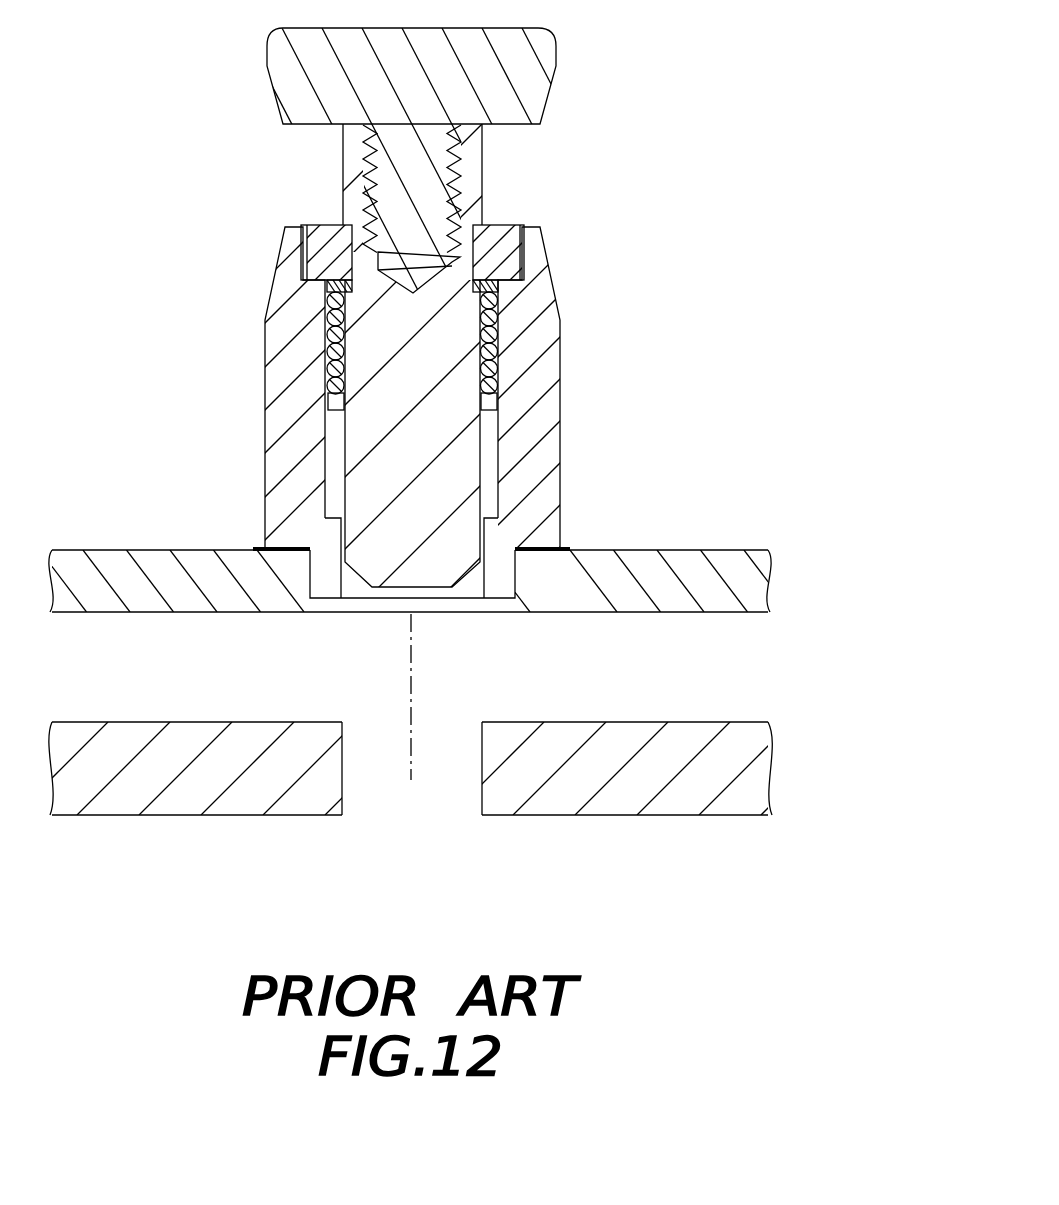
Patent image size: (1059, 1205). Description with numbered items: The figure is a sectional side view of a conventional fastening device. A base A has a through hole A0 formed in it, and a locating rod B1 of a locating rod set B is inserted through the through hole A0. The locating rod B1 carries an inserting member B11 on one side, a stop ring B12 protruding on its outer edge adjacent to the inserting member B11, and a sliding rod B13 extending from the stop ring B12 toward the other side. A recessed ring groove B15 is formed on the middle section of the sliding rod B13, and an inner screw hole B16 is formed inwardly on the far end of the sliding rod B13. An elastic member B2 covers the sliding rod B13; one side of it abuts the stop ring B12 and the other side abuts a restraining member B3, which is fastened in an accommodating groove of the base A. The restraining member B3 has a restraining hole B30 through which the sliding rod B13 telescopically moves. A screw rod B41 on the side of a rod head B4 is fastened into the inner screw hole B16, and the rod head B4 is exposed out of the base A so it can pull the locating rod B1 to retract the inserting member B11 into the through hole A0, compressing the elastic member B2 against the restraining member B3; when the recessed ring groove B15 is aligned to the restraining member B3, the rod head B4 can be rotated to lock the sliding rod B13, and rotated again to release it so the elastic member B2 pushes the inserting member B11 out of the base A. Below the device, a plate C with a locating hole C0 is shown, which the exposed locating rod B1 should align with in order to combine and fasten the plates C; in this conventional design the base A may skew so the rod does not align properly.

The rod head B4 is at (541, 84).
The sliding rod B13 is at (355, 155).
The screw rod B41 is at (400, 207).
The locating rod B1 is at (523, 232).
The restraining hole B30 is at (350, 250).
The restraining member B3 is at (507, 248).
The recessed ring groove B15 is at (337, 285).
The inner screw hole B16 is at (445, 282).
The elastic member B2 is at (327, 375).
The through hole A0 is at (515, 355).
The stop ring B12 is at (330, 402).
The base A is at (547, 402).
The inserting member B11 is at (397, 580).
The plate C is at (555, 803).
The locating hole C0 is at (482, 795).
The locating rod set B is at (175, 135).